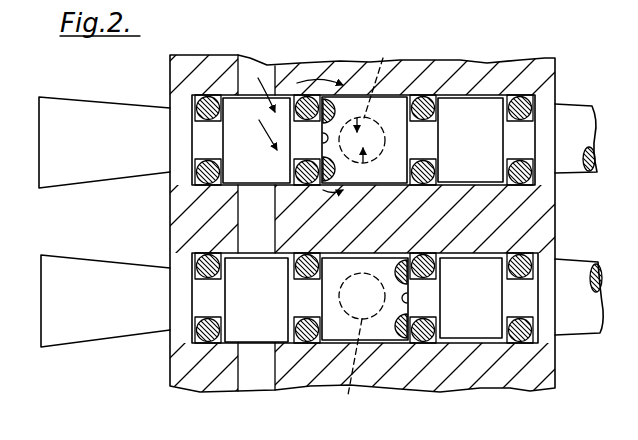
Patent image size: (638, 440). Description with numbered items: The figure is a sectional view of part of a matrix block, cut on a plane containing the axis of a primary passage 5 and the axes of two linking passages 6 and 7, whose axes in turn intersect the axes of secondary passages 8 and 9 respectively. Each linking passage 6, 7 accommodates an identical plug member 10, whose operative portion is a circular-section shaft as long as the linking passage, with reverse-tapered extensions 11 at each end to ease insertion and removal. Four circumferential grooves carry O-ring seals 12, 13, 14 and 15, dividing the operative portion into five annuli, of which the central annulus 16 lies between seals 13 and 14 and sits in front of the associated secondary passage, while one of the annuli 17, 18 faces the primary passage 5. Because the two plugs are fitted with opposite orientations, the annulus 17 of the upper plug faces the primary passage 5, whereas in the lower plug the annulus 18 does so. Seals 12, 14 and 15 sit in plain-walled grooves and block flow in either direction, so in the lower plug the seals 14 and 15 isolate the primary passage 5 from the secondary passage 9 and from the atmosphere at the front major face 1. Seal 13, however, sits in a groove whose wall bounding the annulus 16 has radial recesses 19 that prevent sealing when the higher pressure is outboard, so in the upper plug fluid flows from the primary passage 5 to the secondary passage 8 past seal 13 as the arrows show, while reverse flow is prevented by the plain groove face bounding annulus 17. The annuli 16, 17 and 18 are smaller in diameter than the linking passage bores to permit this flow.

The front major face 1 is at (498, 63).
The primary passage 5 is at (243, 62).
The linking passage 6 is at (490, 183).
The linking passage 7 is at (495, 253).
The secondary passage 8 is at (364, 99).
The secondary passage 9 is at (355, 343).
The plug member 10 is at (578, 104).
The reverse-tapered extension 11 is at (58, 103).
The O-ring seal 12 is at (200, 177).
The O-ring seal 13 is at (301, 95).
The O-ring seal 14 is at (427, 95).
The O-ring seal 15 is at (203, 256).
The central annulus 16 is at (398, 173).
The annulus 17 is at (255, 169).
The annulus 18 is at (482, 150).
The radial recess 19 is at (322, 95).